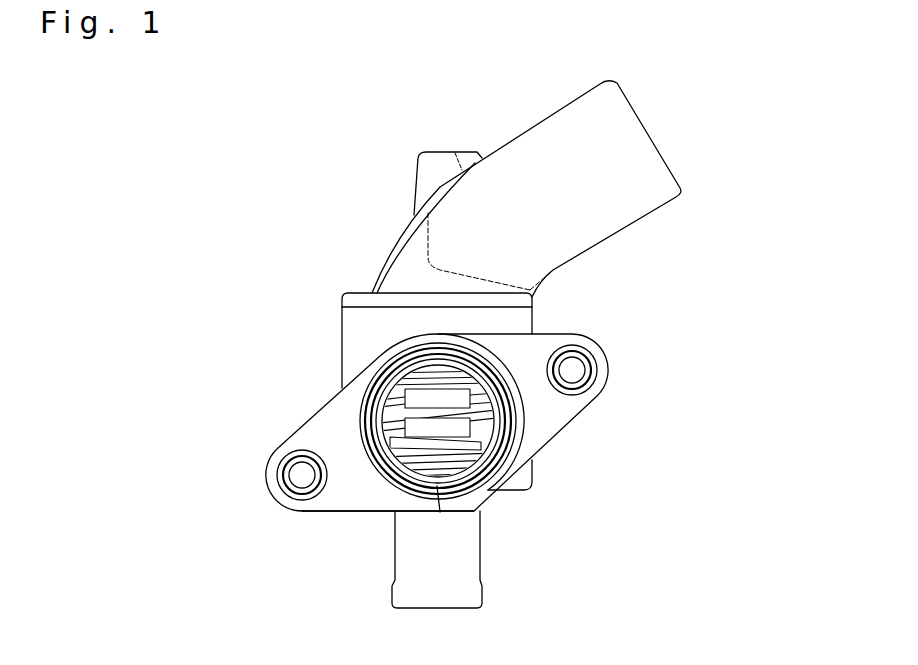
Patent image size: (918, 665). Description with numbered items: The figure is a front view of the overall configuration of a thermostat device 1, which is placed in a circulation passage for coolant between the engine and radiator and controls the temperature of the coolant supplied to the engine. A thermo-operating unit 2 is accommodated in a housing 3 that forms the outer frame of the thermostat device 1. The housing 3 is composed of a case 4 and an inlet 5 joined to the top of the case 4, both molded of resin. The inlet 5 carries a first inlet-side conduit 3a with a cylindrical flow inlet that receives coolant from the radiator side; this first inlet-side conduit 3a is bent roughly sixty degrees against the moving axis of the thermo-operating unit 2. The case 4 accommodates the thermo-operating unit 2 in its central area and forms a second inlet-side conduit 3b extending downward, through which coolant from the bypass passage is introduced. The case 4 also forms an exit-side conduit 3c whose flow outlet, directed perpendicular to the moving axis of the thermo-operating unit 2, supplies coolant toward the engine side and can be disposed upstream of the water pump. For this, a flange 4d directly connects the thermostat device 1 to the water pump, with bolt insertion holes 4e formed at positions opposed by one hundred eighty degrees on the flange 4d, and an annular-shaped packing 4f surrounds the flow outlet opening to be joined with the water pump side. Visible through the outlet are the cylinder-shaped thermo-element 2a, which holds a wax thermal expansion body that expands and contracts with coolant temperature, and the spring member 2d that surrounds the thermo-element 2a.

The thermostat device 1 is at (717, 148).
The thermo-operating unit 2 is at (490, 425).
The thermo-element 2a is at (370, 398).
The spring member 2d is at (383, 403).
The housing 3 is at (553, 357).
The first inlet-side conduit 3a is at (641, 122).
The second inlet-side conduit 3b is at (432, 608).
The exit-side conduit 3c is at (440, 512).
The case 4 is at (534, 478).
The flange 4d is at (360, 497).
The bolt insertion holes 4e is at (573, 370).
The annular-shaped packing 4f is at (471, 487).
The inlet 5 is at (618, 228).